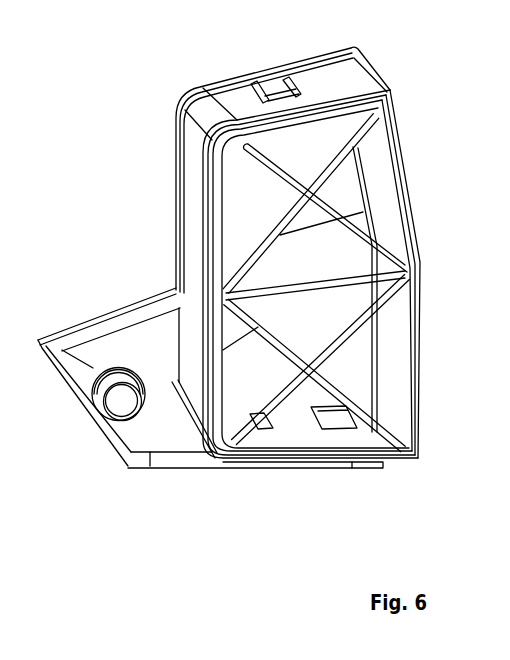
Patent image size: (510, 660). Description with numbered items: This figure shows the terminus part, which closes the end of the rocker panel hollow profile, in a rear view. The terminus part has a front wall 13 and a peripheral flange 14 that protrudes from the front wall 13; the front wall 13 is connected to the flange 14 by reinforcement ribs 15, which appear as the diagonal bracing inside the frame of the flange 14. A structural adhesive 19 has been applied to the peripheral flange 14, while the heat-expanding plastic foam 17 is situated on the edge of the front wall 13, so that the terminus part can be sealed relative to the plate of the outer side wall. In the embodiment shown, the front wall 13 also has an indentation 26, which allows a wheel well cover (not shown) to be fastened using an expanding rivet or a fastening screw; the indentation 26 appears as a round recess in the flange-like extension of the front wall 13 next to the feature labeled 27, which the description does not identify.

The front wall 13 is at (341, 179).
The peripheral flange 14 is at (355, 83).
The reinforcement ribs 15 is at (363, 237).
The plastic foam 17 is at (119, 369).
The adhesive 19 is at (402, 149).
The indentation 26 is at (117, 407).
The boss 27 is at (93, 368).